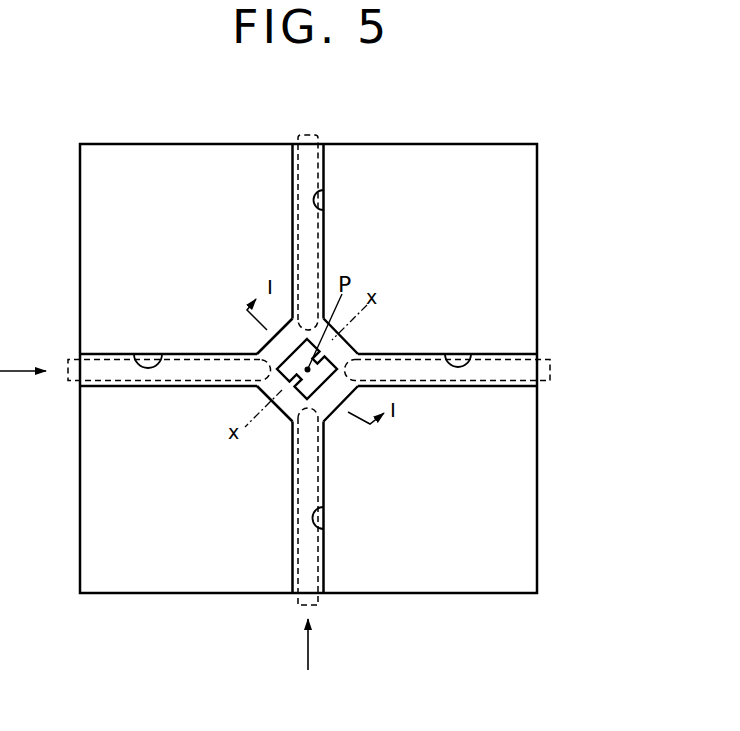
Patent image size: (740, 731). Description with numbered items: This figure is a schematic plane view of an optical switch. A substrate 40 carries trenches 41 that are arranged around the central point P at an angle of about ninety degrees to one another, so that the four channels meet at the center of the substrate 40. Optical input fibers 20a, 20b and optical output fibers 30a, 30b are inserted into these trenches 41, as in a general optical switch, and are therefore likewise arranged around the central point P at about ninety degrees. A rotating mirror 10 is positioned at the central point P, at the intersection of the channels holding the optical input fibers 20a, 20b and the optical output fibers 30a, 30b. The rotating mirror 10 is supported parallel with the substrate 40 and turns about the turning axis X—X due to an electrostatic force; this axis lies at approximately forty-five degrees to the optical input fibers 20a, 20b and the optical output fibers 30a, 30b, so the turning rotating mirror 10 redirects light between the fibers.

The substrate 40 is at (580, 156).
The optical output fiber 30b is at (310, 137).
The optical input fiber 20b is at (318, 603).
The optical input fiber 20a is at (70, 378).
The optical output fiber 30a is at (550, 370).
The trenches 41 is at (324, 210).
The rotating mirror 10 is at (270, 362).